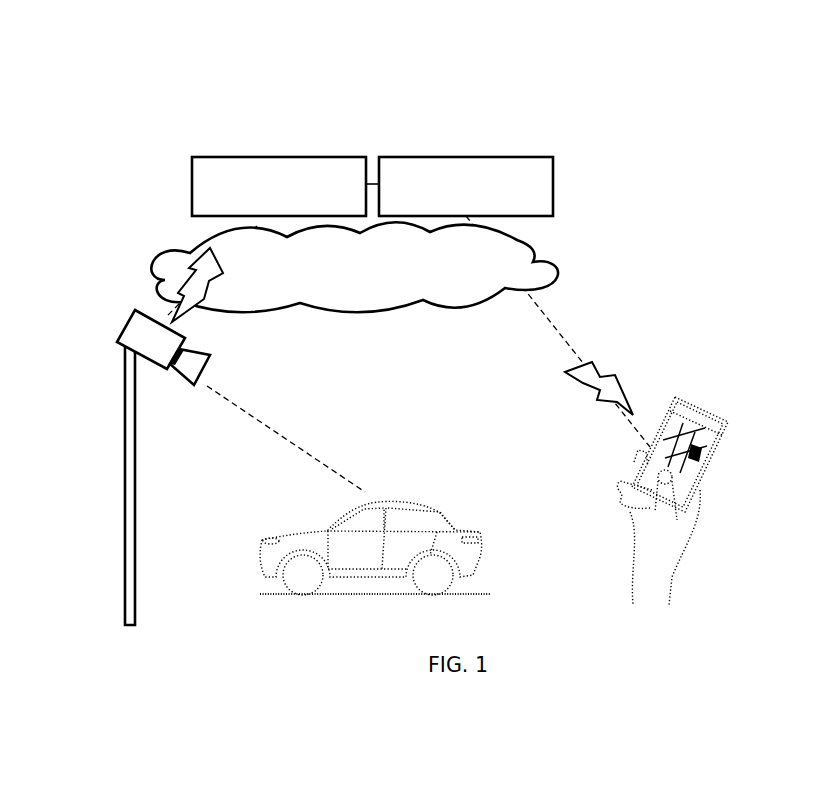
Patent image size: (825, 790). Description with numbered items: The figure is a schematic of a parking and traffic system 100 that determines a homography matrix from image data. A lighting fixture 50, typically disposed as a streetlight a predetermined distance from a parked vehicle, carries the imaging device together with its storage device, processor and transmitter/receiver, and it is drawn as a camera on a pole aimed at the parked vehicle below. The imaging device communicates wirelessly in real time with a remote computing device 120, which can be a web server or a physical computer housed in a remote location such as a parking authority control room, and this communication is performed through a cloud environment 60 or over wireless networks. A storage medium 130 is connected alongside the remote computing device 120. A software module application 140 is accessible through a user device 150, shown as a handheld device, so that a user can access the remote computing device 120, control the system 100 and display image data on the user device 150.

The system 100 is at (169, 133).
The remote computing device 120 is at (293, 157).
The storage medium 130 is at (475, 158).
The cloud environment 60 is at (333, 282).
The lighting fixture 50 is at (131, 329).
The software module application 140 is at (667, 424).
The user device 150 is at (716, 416).